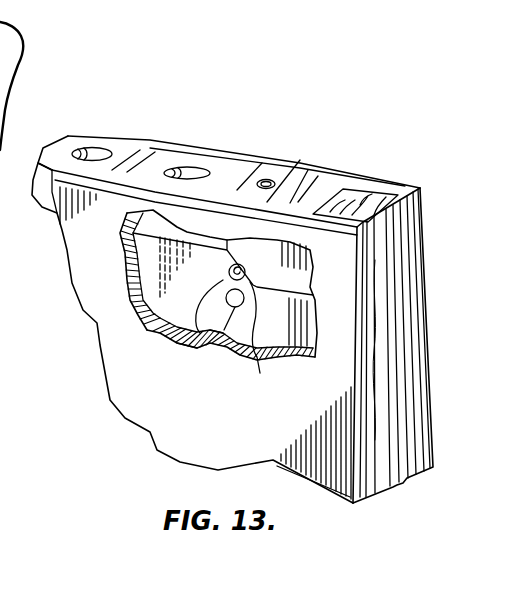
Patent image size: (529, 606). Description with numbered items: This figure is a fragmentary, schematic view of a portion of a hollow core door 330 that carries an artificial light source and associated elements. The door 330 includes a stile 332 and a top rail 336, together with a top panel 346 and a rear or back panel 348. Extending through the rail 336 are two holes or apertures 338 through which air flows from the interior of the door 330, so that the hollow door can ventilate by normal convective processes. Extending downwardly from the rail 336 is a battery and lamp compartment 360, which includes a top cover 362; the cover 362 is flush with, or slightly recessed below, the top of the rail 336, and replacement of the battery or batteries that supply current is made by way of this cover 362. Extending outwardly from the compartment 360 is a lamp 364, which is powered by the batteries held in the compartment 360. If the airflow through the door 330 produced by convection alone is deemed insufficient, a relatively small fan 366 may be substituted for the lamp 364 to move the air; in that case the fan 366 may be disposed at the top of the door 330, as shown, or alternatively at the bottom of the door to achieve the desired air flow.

The hollow core door 330 is at (272, 80).
The stile 332 is at (403, 487).
The top rail 336 is at (218, 180).
The holes or apertures 338 is at (97, 147).
The top panel 346 is at (150, 437).
The rear or back panel 348 is at (378, 182).
The battery and lamp compartment 360 is at (260, 372).
The top cover 362 is at (287, 182).
The lamp 364 is at (190, 348).
The fan 366 is at (224, 330).